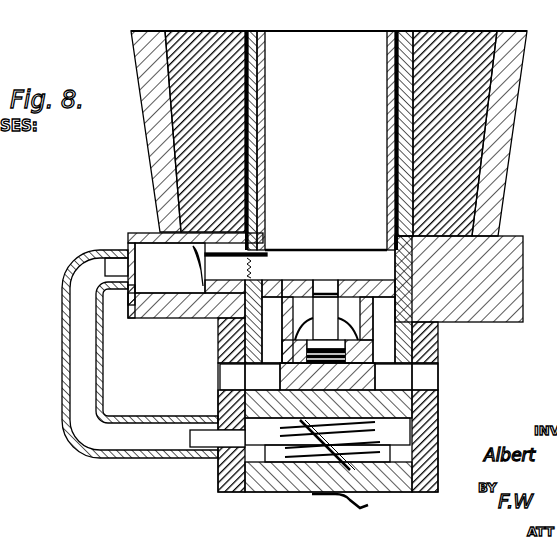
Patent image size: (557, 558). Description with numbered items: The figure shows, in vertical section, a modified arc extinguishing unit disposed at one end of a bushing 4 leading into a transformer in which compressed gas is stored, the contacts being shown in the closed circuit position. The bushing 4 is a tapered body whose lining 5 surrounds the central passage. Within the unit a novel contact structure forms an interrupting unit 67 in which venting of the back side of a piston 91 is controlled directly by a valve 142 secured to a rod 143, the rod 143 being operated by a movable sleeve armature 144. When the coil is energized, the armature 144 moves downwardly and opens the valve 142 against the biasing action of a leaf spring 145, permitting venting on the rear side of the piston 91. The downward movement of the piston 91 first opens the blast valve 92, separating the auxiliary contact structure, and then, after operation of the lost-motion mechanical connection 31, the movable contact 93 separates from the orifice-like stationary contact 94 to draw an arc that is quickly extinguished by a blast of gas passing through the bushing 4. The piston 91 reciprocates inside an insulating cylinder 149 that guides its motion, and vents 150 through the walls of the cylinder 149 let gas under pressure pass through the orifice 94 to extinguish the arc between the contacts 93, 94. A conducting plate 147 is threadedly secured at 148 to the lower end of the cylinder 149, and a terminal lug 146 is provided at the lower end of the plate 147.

The bushing 4 is at (519, 107).
The refractory lining 5 is at (386, 147).
The movable sleeve armature 144 is at (276, 171).
The rod 143 is at (274, 266).
The leaf spring 145 is at (191, 256).
The valve 142 is at (197, 278).
The orifice-like stationary contact 94 is at (322, 282).
The movable contact 93 is at (316, 308).
The blast valve 92 is at (378, 348).
The piston 91 is at (393, 377).
The lost-motion mechanical connection 31 is at (262, 377).
The interrupting unit 67 is at (217, 377).
The vents 150 is at (220, 366).
The insulating cylinder 149 is at (438, 412).
The conducting plate 147 is at (280, 493).
The terminal lug 146 is at (338, 509).
The threaded securement 148 is at (400, 494).